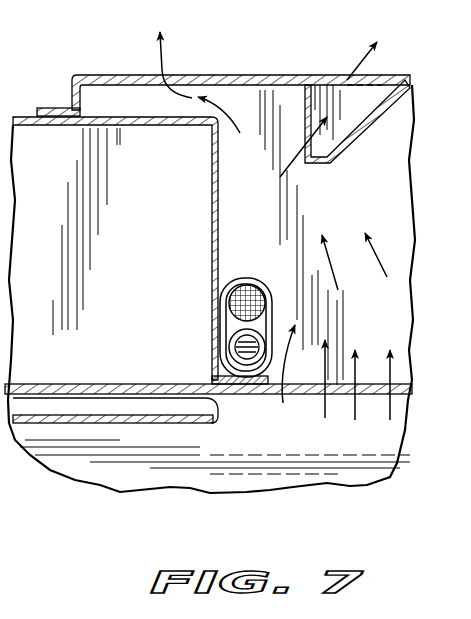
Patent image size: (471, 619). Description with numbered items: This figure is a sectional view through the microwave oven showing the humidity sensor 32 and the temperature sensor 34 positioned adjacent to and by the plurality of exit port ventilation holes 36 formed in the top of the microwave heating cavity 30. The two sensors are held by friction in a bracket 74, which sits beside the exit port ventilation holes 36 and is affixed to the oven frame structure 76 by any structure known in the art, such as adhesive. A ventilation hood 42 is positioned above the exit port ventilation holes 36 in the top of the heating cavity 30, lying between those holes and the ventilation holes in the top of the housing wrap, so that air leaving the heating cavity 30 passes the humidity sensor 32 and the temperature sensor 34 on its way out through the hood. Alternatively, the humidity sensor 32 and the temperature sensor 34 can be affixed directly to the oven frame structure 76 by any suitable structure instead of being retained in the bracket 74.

The microwave heating cavity 30 is at (150, 468).
The humidity sensor 32 is at (228, 348).
The temperature sensor 34 is at (228, 304).
The exit port ventilation holes 36 is at (307, 394).
The ventilation hood 42 is at (157, 76).
The bracket 74 is at (266, 292).
The oven frame structure 76 is at (198, 386).